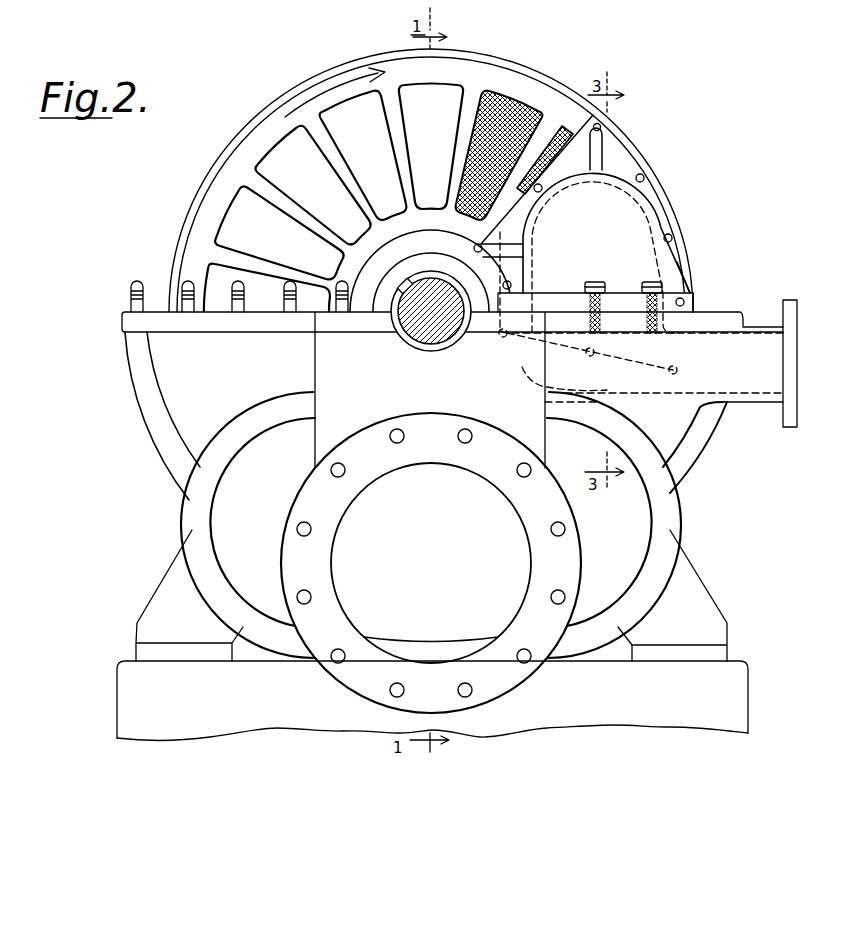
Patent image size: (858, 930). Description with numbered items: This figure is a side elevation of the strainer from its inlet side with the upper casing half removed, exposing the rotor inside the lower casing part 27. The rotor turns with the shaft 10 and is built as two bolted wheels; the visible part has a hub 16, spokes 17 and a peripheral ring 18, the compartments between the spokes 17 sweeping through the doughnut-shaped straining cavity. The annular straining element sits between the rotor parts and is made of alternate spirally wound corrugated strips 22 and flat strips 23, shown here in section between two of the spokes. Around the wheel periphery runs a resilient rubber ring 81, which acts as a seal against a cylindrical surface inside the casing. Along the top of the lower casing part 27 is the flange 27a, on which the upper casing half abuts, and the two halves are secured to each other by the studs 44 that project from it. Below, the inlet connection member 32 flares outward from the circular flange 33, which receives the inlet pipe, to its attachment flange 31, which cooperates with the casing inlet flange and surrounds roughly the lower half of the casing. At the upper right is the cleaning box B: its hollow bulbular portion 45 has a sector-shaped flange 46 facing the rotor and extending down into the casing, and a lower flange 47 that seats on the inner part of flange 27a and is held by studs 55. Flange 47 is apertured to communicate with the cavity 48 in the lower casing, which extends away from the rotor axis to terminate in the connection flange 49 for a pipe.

The shaft 10 is at (413, 330).
The hub 16 is at (382, 228).
The spokes 17 is at (330, 162).
The ring 18 is at (247, 147).
The resilient ring 81 is at (203, 188).
The corrugated strips 22 is at (503, 97).
The flat strips 23 is at (534, 112).
The studs 44 is at (220, 335).
The flange 27a is at (292, 323).
The casing part 27 is at (693, 458).
The flange 31 is at (660, 525).
The inlet connection member 32 is at (430, 522).
The flange 33 is at (535, 540).
The bulbular portion 45 is at (635, 218).
The flange 46 is at (613, 155).
The flange 47 is at (688, 282).
The cavity 48 is at (540, 383).
The connection flange 49 is at (795, 318).
The studs 55 is at (635, 257).